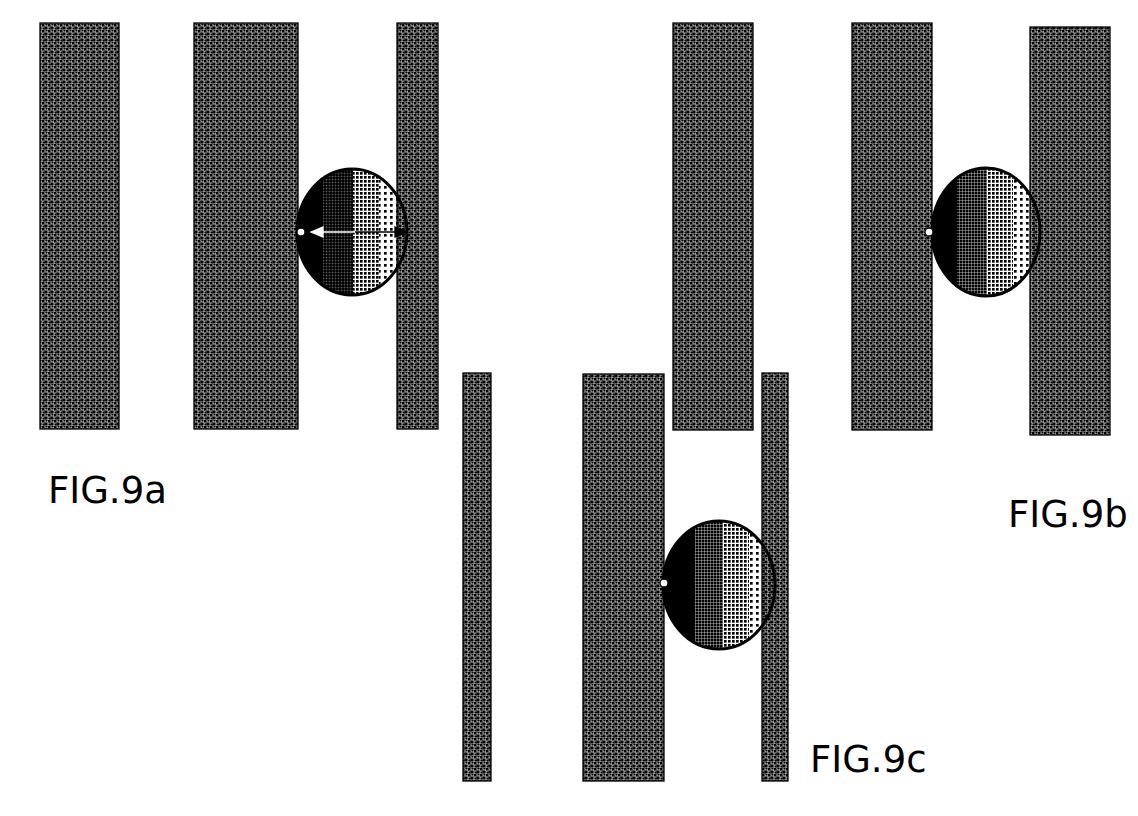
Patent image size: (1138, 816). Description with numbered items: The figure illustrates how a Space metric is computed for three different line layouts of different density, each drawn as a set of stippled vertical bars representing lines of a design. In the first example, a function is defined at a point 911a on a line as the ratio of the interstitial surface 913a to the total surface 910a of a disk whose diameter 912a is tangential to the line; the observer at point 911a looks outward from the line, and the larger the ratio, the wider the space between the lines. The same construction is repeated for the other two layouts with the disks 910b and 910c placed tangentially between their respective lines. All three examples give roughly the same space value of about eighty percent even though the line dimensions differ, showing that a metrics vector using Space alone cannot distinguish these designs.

In FIG. 9A, the total surface of disk 910a is at (422, 285).
In FIG. 9A, the point of a line 911a is at (313, 172).
In FIG. 9A, the disk diameter 912a is at (358, 231).
In FIG. 9A, the interstitial surface 913a is at (358, 270).
In FIG. 9B, the disk total surface (second layout) 910b is at (991, 297).
In FIG. 9C, the disk total surface (third layout) 910c is at (703, 647).